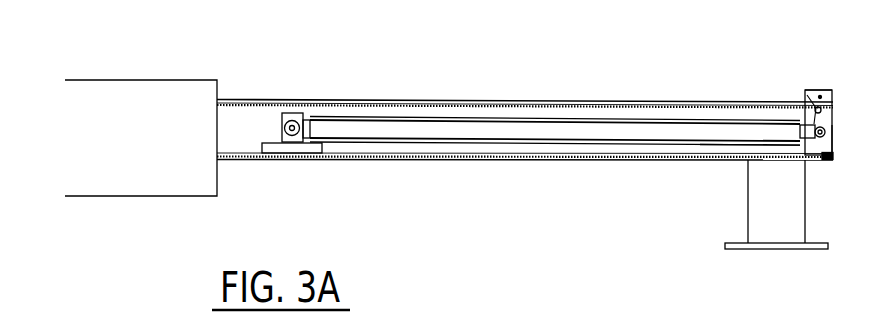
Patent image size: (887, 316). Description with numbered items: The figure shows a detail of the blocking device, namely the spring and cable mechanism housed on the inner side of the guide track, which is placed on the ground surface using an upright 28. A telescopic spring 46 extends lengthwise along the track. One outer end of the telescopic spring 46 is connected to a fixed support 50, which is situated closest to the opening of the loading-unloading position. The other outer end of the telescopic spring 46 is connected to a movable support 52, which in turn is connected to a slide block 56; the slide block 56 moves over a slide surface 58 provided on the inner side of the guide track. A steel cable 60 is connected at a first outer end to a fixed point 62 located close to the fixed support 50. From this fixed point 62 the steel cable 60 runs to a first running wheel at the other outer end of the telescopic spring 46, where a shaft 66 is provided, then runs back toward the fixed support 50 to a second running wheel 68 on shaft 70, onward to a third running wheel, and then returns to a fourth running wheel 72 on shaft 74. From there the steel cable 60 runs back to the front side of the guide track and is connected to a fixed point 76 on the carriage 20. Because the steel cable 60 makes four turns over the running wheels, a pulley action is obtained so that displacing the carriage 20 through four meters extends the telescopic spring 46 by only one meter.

The carriage 20 is at (153, 62).
The fixed point 76 is at (226, 94).
The slide surface 58 is at (333, 160).
The telescopic spring 46 is at (455, 133).
The movable support 52 is at (302, 112).
The shaft 66 is at (284, 130).
The slide block 56 is at (282, 160).
The fixed support 50 is at (825, 90).
The shaft 74 is at (807, 92).
The fourth running wheel 72 is at (822, 110).
The shaft 70 is at (800, 131).
The fixed point 62 is at (833, 155).
The second running wheel 68 is at (833, 142).
The steel cable 60 is at (708, 150).
The upright 28 is at (757, 222).